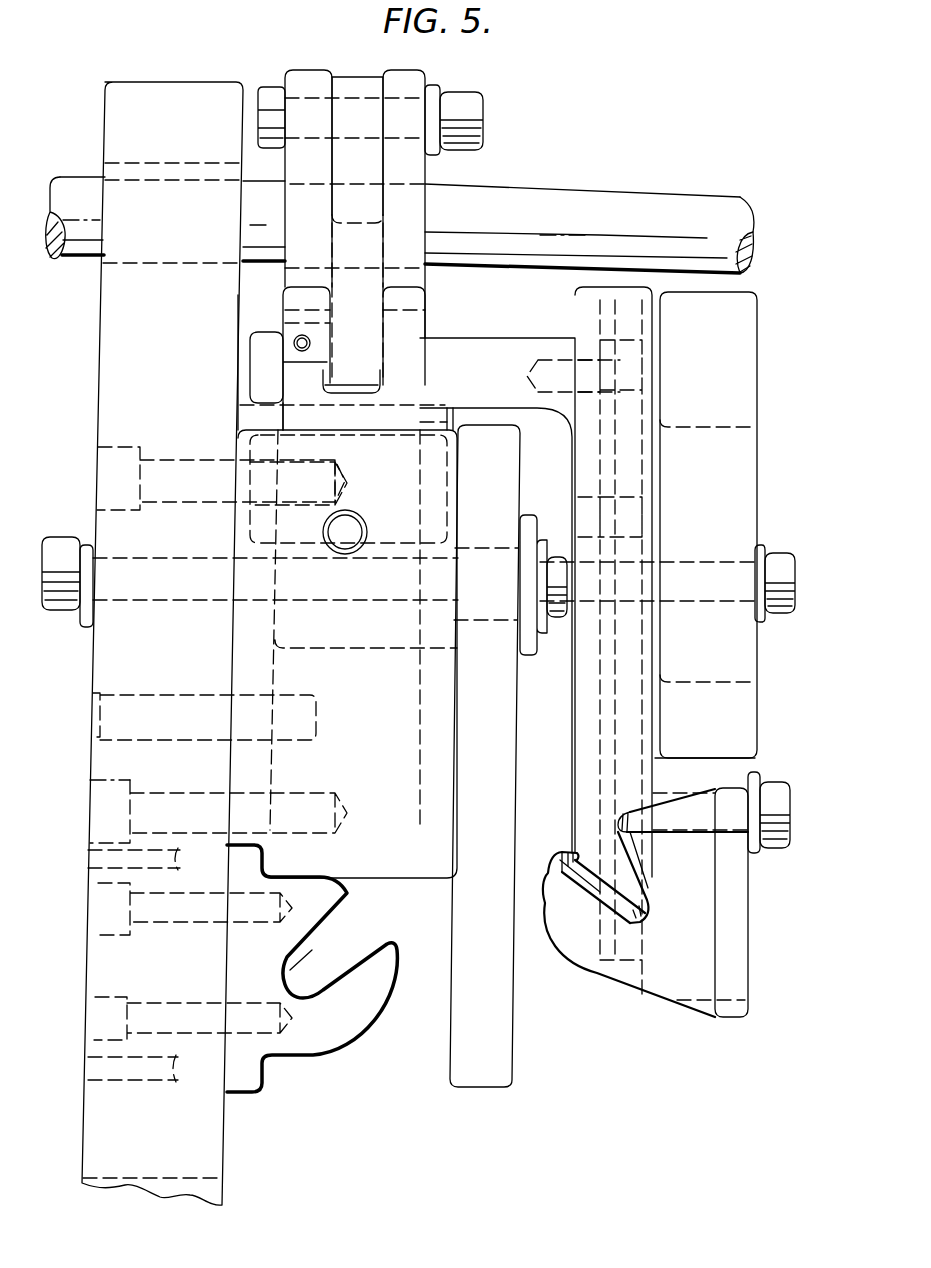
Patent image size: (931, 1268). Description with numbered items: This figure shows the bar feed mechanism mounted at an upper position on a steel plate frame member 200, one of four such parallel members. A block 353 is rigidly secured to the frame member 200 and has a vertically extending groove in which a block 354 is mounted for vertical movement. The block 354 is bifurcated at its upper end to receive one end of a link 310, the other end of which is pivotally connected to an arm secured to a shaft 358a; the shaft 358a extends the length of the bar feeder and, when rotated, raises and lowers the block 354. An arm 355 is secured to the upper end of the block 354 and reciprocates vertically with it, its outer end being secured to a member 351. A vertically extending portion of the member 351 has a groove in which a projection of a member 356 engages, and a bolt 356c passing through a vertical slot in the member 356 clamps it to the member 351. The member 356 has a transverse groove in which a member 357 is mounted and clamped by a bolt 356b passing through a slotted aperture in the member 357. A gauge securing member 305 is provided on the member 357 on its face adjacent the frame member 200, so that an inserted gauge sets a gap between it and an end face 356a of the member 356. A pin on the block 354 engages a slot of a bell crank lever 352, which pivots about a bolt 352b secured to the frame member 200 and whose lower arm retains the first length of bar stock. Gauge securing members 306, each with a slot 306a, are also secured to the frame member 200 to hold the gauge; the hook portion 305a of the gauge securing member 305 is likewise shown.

The frame member 200 is at (122, 352).
The link 310 is at (357, 207).
The block 354 is at (410, 300).
The arm 355 is at (497, 312).
The member 351 is at (598, 310).
The shaft 358a is at (668, 247).
The member 356 is at (742, 390).
The bolt 352b is at (88, 545).
The bolt 356c is at (760, 557).
The end face 356a is at (728, 775).
The block 353 is at (385, 878).
The bolt 356b is at (762, 853).
The member 357 is at (780, 895).
The slot 306a is at (315, 960).
The spring clip hook portion 305a is at (612, 882).
The gauge securing member 305 is at (610, 987).
The gauge securing member 306 is at (326, 1052).
The bell crank lever 352 is at (475, 1090).